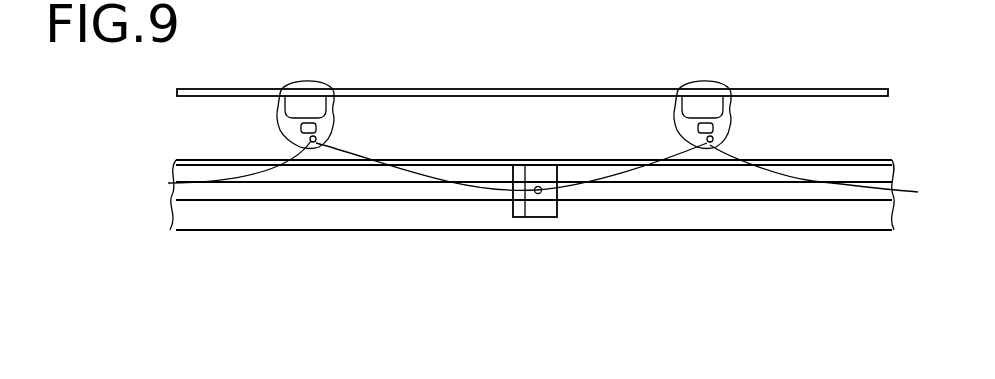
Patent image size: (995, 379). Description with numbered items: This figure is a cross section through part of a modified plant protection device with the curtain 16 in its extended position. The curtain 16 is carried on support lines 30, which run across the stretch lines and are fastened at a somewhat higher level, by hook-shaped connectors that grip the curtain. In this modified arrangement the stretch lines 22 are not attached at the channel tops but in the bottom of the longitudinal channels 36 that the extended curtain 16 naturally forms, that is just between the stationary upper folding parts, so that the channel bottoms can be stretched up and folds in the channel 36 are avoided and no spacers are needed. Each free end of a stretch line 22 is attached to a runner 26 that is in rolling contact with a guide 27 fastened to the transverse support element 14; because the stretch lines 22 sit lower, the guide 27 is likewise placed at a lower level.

The transverse support element 14 is at (216, 218).
The curtain 16 is at (622, 176).
The stretch line 22 is at (534, 193).
The runner 26 is at (541, 203).
The guide 27 is at (805, 190).
The support line 30 is at (495, 87).
The channel 36 is at (417, 173).